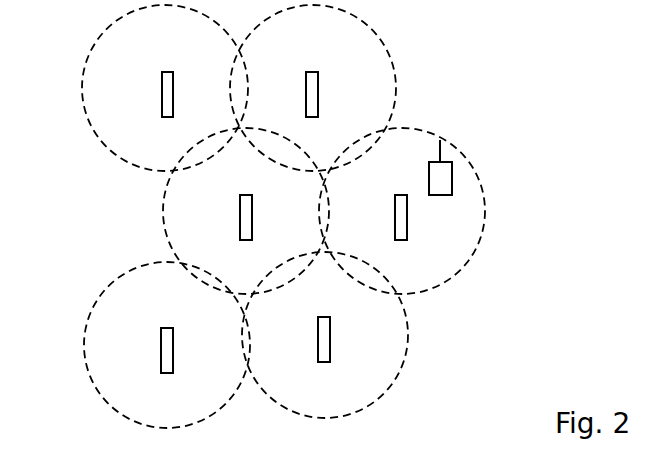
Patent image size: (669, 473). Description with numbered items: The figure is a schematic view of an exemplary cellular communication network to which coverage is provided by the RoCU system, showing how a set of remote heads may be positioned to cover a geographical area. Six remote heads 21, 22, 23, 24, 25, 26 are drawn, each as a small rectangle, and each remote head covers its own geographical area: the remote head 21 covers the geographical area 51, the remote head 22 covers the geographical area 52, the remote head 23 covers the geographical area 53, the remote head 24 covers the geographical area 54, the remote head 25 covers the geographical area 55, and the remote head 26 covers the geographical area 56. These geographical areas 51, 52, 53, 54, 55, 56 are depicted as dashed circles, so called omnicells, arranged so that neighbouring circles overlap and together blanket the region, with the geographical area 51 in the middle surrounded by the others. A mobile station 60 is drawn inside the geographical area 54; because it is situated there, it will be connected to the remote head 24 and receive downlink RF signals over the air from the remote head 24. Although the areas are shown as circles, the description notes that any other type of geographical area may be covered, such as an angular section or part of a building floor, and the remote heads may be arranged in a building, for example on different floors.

The remote head 21 is at (240, 226).
The remote head 22 is at (162, 72).
The remote head 23 is at (306, 73).
The remote head 24 is at (395, 198).
The remote head 25 is at (161, 329).
The remote head 26 is at (318, 336).
The geographical area 51 is at (163, 192).
The geographical area 52 is at (83, 70).
The geographical area 53 is at (385, 50).
The geographical area 54 is at (475, 262).
The geographical area 55 is at (83, 326).
The geographical area 56 is at (408, 342).
The mobile station 60 is at (452, 180).